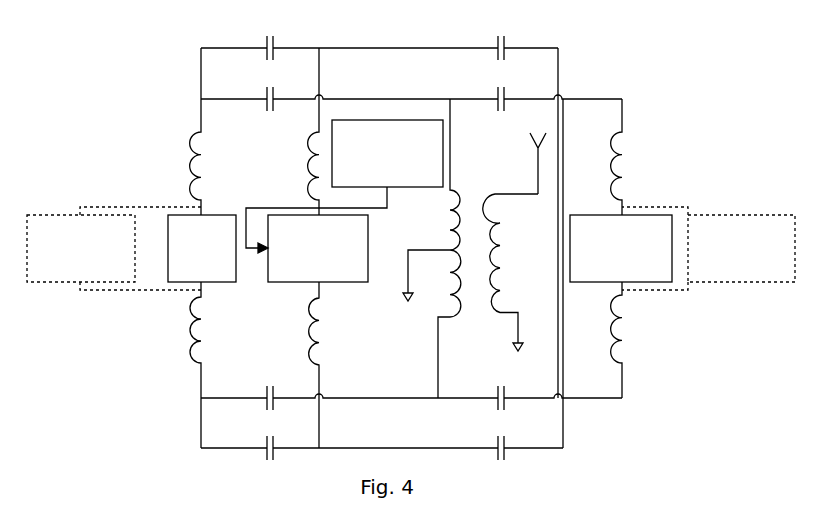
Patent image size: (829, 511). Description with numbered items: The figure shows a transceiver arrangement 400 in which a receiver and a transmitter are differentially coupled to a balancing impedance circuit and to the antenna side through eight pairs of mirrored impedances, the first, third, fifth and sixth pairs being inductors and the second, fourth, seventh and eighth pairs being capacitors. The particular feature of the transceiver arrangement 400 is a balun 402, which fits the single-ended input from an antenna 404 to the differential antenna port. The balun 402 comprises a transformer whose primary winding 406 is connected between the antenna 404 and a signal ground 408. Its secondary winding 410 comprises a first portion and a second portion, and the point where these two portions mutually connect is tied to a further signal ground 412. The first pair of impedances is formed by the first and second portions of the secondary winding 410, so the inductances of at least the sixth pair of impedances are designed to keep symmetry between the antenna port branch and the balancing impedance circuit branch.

The transceiver arrangement 400 is at (678, 438).
The balun 402 is at (470, 262).
The antenna 404 is at (541, 145).
The primary winding 406 is at (490, 224).
The signal ground 408 is at (528, 347).
The secondary winding 410 is at (460, 235).
The signal ground 412 is at (403, 297).